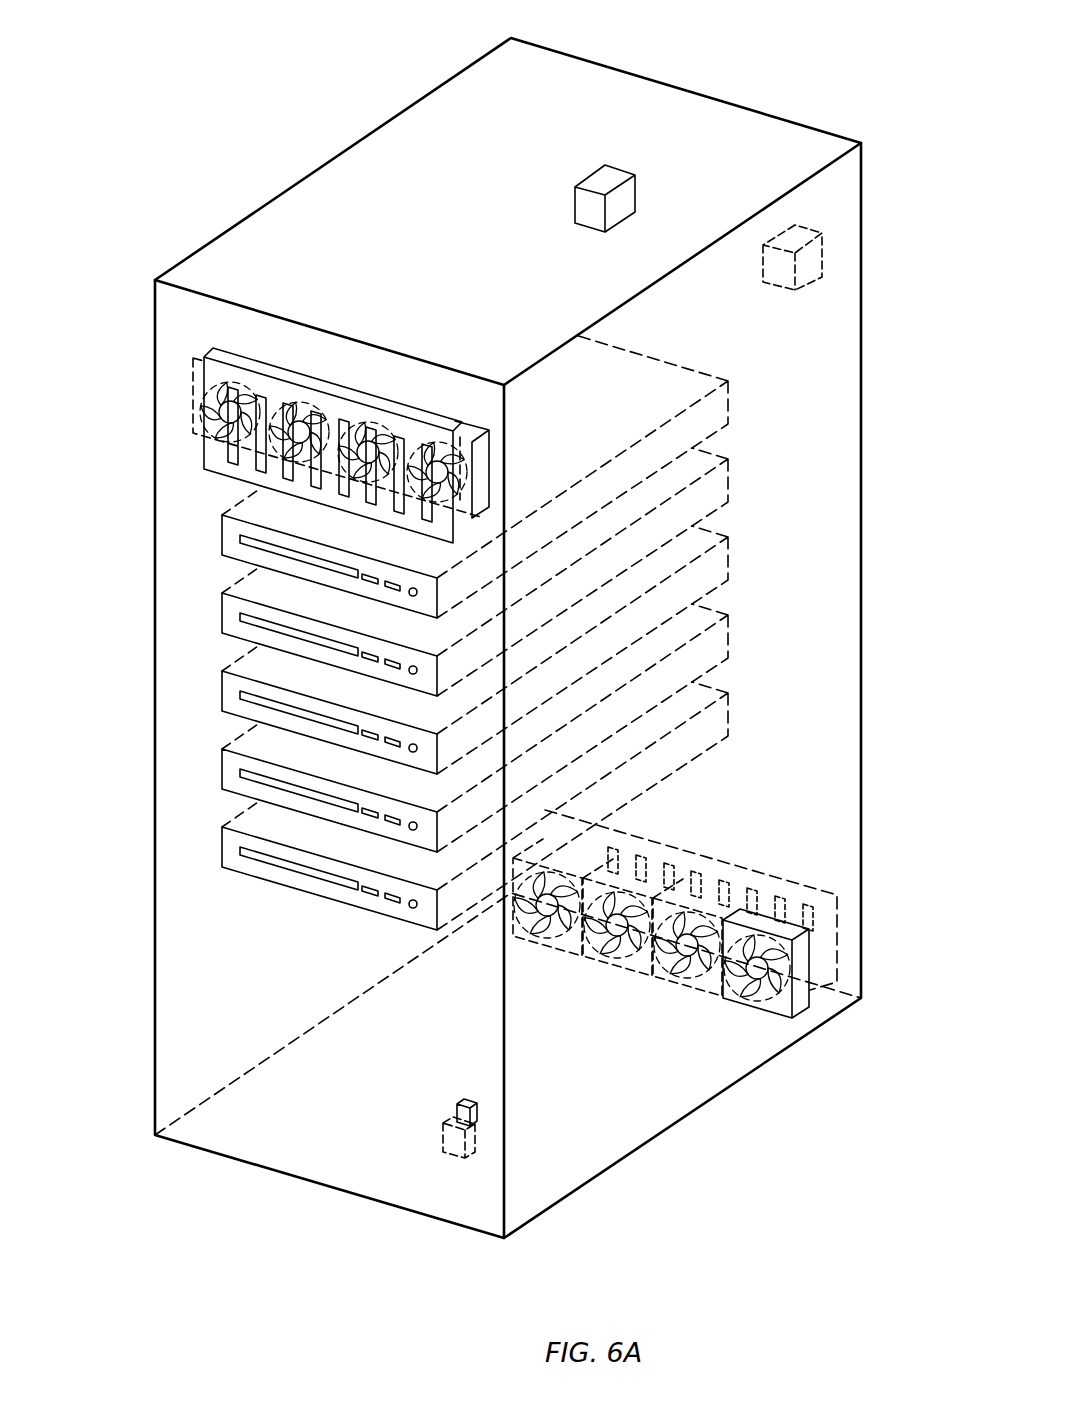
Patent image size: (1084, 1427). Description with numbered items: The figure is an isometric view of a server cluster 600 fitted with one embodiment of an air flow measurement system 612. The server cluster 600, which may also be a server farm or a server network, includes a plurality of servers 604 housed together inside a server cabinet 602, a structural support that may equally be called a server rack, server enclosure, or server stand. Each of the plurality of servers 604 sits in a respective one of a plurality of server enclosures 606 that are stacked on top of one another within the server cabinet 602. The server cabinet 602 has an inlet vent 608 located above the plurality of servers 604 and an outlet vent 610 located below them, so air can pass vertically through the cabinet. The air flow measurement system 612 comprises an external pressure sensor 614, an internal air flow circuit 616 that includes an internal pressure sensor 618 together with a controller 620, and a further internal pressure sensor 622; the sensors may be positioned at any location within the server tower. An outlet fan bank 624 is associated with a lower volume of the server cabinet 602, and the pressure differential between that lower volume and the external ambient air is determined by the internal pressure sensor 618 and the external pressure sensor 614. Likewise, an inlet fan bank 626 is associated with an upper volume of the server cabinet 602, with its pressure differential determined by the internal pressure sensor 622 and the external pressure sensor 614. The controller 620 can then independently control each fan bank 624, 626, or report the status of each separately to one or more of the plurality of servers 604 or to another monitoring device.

The server cluster 600 is at (504, 654).
The server cabinet 602 is at (788, 120).
The plurality of servers 604 is at (762, 633).
The server enclosures 606 is at (218, 770).
The inlet vent 608 is at (185, 423).
The outlet vent 610 is at (738, 954).
The air flow measurement system 612 is at (635, 160).
The external pressure sensor 614 is at (590, 176).
The internal air flow circuit 616 is at (484, 1195).
The internal pressure sensor 618 is at (476, 1115).
The controller 620 is at (457, 1158).
The internal pressure sensor 622 is at (823, 263).
The outlet fan bank 624 is at (802, 1015).
The inlet fan bank 626 is at (192, 365).